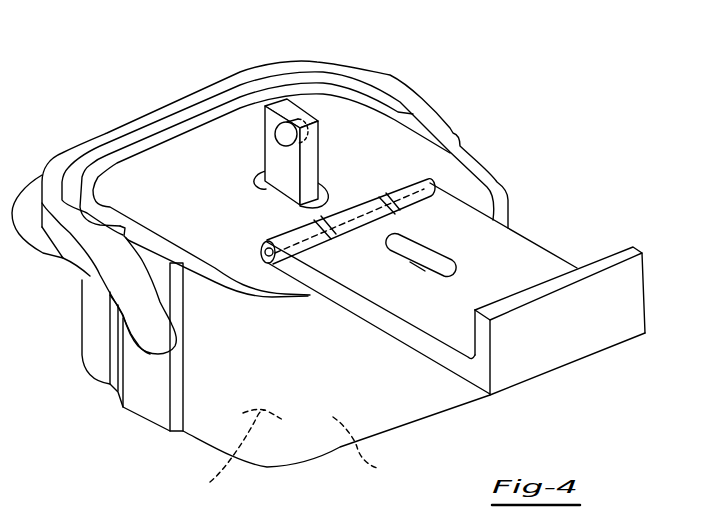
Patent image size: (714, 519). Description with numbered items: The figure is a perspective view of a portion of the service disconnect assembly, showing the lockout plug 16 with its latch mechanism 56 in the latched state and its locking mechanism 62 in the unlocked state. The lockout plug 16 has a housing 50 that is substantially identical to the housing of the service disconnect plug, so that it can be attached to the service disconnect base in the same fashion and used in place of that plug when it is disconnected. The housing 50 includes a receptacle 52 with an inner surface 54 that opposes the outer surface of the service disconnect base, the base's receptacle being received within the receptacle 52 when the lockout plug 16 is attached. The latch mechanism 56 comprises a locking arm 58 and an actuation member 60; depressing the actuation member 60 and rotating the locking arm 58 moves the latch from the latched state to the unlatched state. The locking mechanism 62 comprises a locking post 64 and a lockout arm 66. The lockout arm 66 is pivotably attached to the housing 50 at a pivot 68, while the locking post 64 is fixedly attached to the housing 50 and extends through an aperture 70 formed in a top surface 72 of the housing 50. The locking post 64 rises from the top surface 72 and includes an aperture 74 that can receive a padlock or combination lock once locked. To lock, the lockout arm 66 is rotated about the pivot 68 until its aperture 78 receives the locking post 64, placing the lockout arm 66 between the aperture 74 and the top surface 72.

The lockout plug 16 is at (452, 103).
The housing 50 is at (430, 400).
The receptacle 52 is at (377, 468).
The inner surface 54 is at (218, 481).
The latch mechanism 56 is at (57, 151).
The locking arm 58 is at (190, 100).
The actuation member 60 is at (118, 143).
The locking mechanism 62 is at (552, 238).
The locking post 64 is at (280, 106).
The lockout arm 66 is at (603, 331).
The pivot 68 is at (266, 260).
The aperture 70 is at (322, 197).
The top surface 72 is at (187, 176).
The aperture 74 is at (283, 134).
The aperture 78 is at (410, 252).